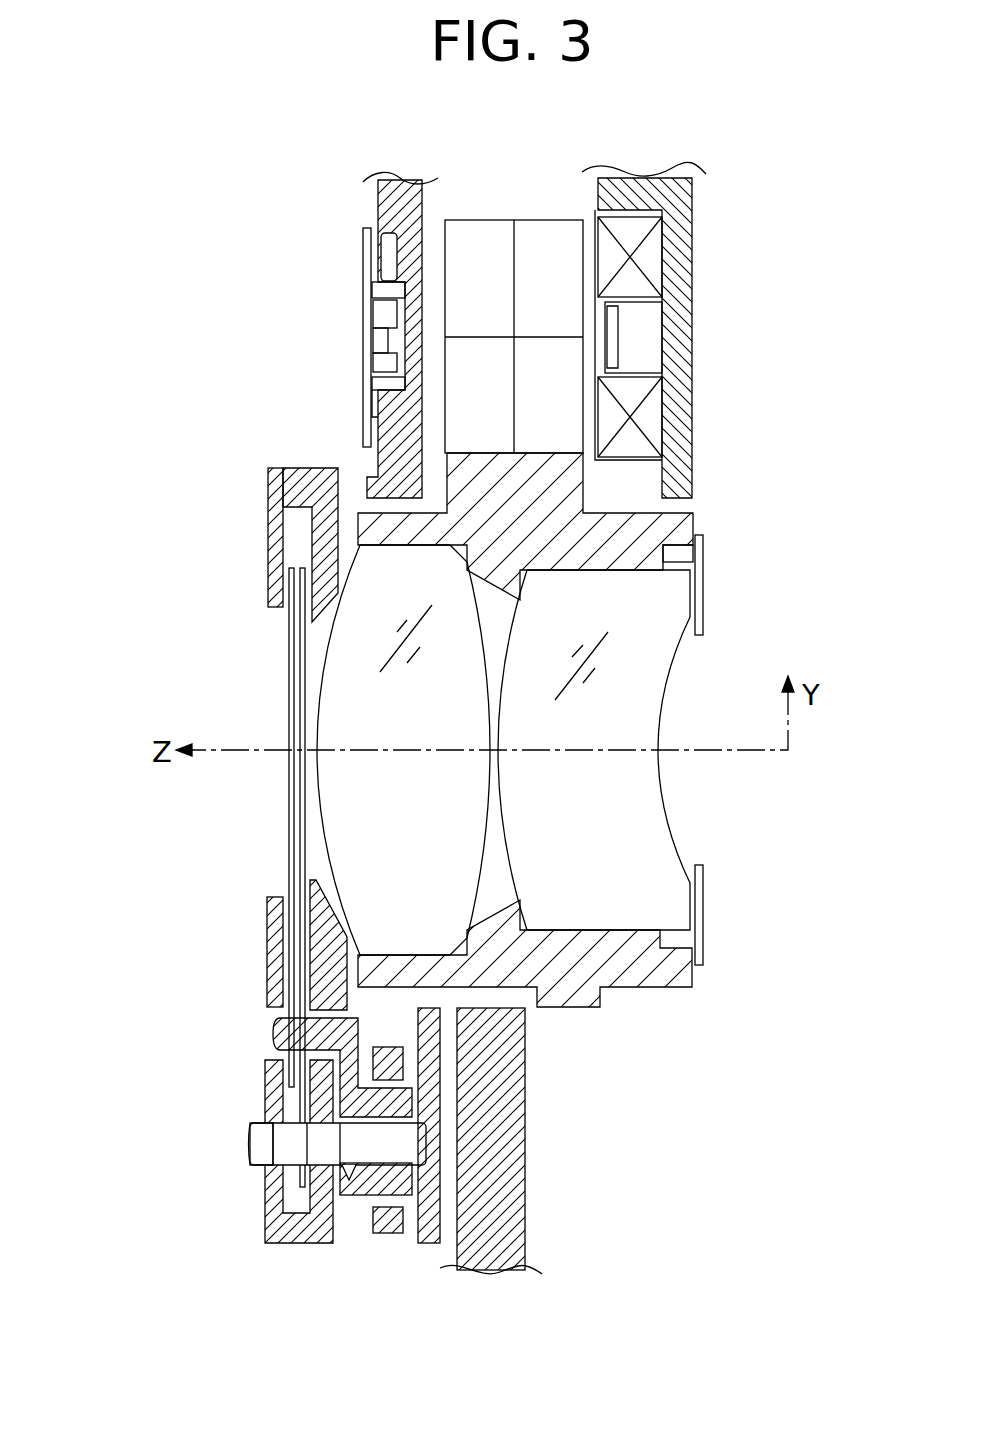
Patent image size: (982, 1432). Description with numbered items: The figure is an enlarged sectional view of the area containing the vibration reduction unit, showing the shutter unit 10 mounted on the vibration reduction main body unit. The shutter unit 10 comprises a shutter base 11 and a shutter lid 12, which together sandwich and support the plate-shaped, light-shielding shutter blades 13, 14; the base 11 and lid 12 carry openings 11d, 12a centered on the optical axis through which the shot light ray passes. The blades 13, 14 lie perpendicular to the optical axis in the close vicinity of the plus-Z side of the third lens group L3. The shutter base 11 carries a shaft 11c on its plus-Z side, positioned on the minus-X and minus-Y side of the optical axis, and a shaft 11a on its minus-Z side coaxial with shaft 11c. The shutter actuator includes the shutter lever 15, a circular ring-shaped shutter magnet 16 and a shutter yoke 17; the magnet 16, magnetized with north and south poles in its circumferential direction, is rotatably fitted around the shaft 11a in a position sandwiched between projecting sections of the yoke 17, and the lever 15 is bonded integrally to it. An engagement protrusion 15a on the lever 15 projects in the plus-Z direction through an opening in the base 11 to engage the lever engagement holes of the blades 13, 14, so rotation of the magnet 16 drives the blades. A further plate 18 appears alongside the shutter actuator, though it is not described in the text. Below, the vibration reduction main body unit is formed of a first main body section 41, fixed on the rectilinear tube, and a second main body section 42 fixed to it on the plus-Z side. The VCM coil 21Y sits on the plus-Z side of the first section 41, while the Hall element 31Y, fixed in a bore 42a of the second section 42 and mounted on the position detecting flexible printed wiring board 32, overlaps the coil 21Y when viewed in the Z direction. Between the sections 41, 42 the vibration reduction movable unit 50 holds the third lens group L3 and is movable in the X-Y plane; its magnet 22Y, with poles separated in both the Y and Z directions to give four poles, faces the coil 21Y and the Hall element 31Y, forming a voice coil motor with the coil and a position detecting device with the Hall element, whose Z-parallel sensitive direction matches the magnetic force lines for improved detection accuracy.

The shutter unit 10 is at (192, 462).
The shutter base 11 is at (303, 482).
The shaft 11a is at (415, 1137).
The shaft 11c is at (273, 1142).
The opening 11d is at (248, 856).
The shutter lid 12 is at (280, 525).
The opening 12a is at (248, 856).
The shutter blade 13 is at (293, 657).
The shutter blade 14 is at (303, 697).
The shutter lever 15 is at (353, 1195).
The engagement protrusion 15a is at (275, 1028).
The shutter magnet 16 is at (373, 1195).
The shutter yoke 17 is at (390, 1233).
The holding plate 18 is at (433, 1200).
The VCM coil 21Y is at (655, 252).
The magnet 22Y is at (475, 230).
The Hall element 31Y is at (380, 338).
The position detecting flexible printed wiring board 32 is at (398, 280).
The first main body section 41 is at (682, 342).
The second main body section 42 is at (392, 193).
The bore 42a is at (368, 233).
The vibration reduction movable unit 50 is at (700, 535).
The third lens group L3 is at (342, 802).